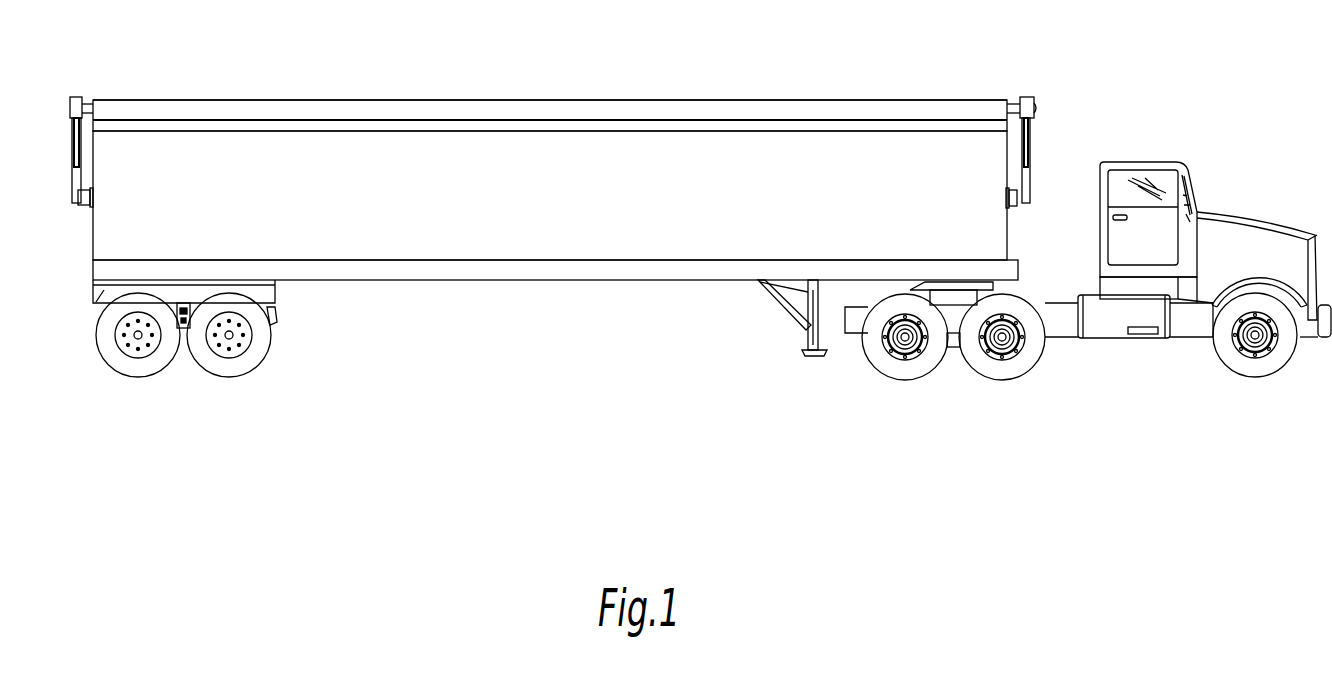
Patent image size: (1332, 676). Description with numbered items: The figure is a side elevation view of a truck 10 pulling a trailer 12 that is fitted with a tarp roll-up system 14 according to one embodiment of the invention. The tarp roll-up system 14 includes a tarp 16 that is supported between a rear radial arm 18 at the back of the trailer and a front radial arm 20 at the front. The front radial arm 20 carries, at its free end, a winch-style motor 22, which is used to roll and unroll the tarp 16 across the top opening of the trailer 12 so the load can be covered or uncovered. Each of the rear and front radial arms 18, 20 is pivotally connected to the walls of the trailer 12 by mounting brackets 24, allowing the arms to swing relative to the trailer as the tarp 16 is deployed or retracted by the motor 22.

The truck 10 is at (1257, 237).
The trailer 12 is at (545, 278).
The tarp roll-up system 14 is at (948, 43).
The tarp 16 is at (558, 108).
The rear radial arm 18 is at (72, 134).
The front radial arm 20 is at (1032, 150).
The winch-style motor 22 is at (1030, 100).
The mounting brackets 24 is at (82, 207).